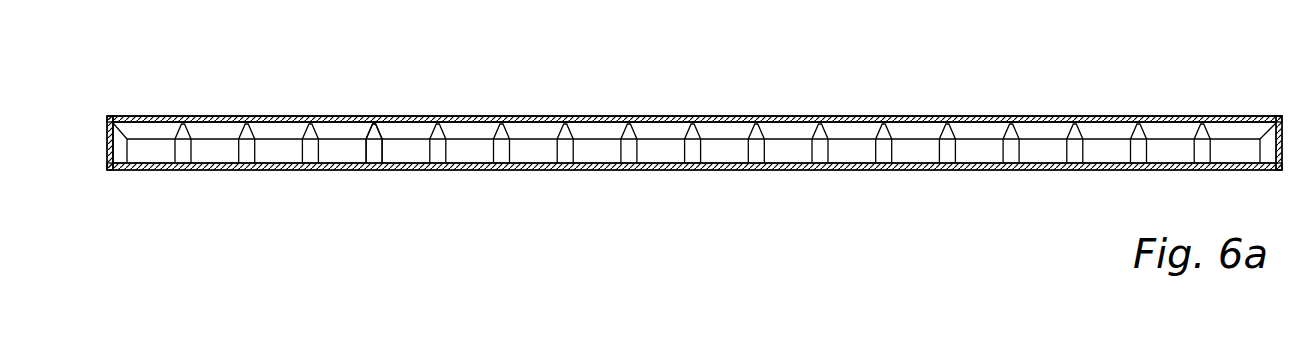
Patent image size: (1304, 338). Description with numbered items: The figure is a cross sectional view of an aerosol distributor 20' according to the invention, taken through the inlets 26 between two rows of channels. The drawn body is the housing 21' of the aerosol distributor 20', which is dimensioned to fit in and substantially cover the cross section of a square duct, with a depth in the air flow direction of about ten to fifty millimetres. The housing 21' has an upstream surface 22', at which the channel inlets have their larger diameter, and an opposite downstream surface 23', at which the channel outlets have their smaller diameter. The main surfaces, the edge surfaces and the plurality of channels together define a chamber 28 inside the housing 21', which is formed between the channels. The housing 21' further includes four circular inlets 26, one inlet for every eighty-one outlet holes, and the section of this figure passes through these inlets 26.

The aerosol distributor 20' is at (694, 99).
The housing 21' is at (108, 174).
The upstream surface 22' is at (694, 86).
The downstream surface 23' is at (554, 179).
The inlet 26 is at (373, 124).
The chamber 28 is at (376, 160).